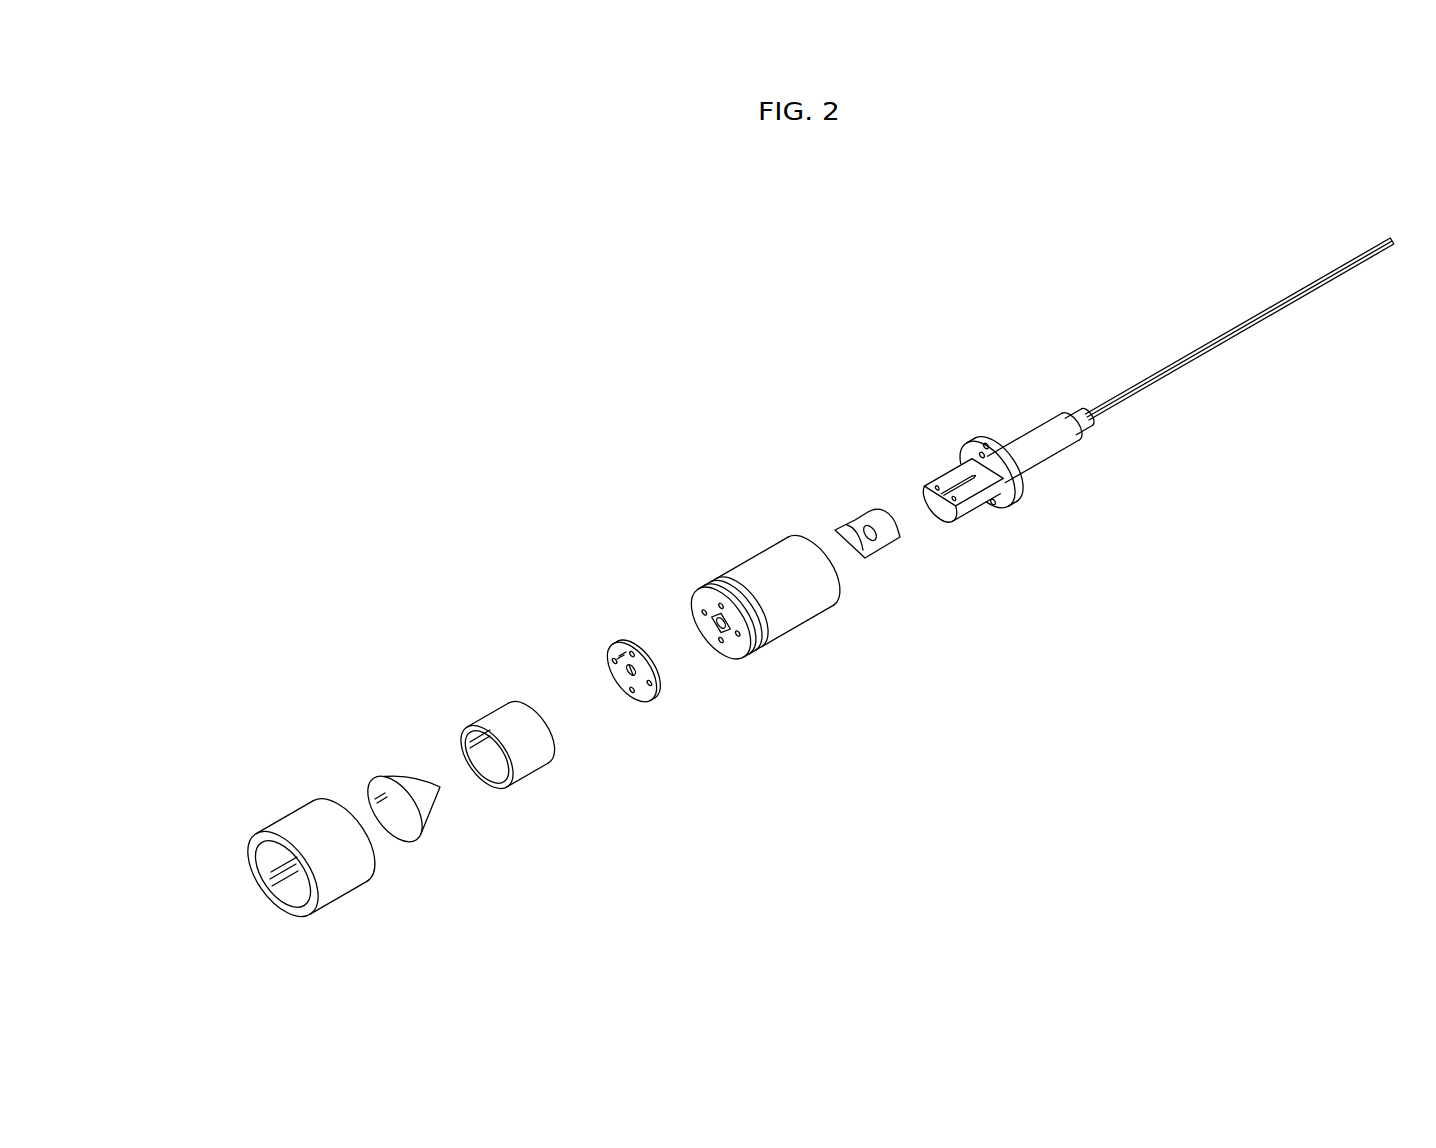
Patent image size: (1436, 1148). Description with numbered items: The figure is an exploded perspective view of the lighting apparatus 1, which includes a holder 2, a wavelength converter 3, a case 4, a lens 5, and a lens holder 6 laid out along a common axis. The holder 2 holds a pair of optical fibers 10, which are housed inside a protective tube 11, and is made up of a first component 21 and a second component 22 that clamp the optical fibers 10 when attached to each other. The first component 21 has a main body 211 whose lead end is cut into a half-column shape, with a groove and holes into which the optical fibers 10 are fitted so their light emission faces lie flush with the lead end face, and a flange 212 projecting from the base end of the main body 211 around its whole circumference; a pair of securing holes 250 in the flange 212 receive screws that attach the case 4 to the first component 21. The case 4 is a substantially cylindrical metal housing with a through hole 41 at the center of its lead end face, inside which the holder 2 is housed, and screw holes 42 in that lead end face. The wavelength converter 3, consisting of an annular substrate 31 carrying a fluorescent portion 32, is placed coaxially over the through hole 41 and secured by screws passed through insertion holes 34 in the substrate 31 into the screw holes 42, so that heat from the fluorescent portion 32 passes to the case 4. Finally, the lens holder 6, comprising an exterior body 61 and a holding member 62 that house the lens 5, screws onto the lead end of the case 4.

The lighting apparatus 1 is at (554, 471).
The holder 2 is at (797, 413).
The first component 21 is at (950, 466).
The main body 211 is at (968, 505).
The flange 212 is at (1010, 495).
The securing holes 250 is at (980, 440).
The second component 22 is at (864, 509).
The protective tube 11 is at (1055, 433).
The optical fibers 10 is at (1167, 365).
The case 4 is at (746, 551).
The through hole 41 is at (763, 645).
The screw holes 42 is at (703, 593).
The wavelength converter 3 is at (532, 605).
The substrate 31 is at (623, 685).
The fluorescent portion 32 is at (610, 648).
The insertion holes 34 is at (637, 697).
The lens 5 is at (412, 827).
The lens holder 6 is at (209, 710).
The exterior body 61 is at (310, 823).
The holding member 62 is at (507, 723).